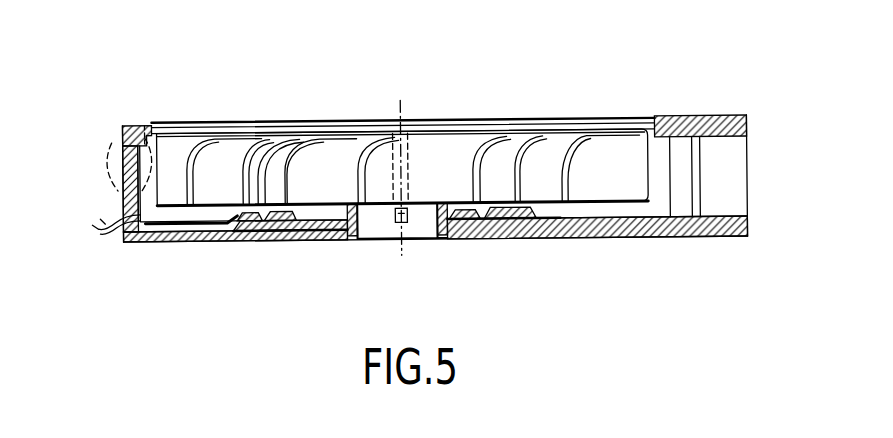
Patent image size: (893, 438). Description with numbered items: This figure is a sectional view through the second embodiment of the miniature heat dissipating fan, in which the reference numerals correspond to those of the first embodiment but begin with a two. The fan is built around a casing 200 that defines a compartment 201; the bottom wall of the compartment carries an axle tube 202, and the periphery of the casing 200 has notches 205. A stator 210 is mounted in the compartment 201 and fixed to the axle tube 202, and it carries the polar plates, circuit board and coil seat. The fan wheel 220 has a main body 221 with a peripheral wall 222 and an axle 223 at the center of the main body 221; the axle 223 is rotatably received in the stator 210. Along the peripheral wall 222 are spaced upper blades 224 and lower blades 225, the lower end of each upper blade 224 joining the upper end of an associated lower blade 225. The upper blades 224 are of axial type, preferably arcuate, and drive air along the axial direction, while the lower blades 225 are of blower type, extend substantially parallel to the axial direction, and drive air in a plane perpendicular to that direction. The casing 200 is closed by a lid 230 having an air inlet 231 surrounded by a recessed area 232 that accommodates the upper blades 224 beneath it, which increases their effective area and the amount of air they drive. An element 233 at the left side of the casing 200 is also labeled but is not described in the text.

The casing 200 is at (660, 238).
The compartment 201 is at (174, 246).
The axle tube 202 is at (335, 242).
The notch 205 is at (143, 120).
The stator 210 is at (505, 233).
The fan wheel 220 is at (585, 51).
The main body 221 is at (285, 130).
The peripheral wall 222 is at (537, 121).
The axle 223 is at (398, 214).
The upper blade 224 is at (483, 131).
The lower blade 225 is at (460, 180).
The lid 230 is at (697, 118).
The air inlet 231 is at (207, 122).
The recessed area 232 is at (157, 124).
The lead wire 233 is at (120, 180).